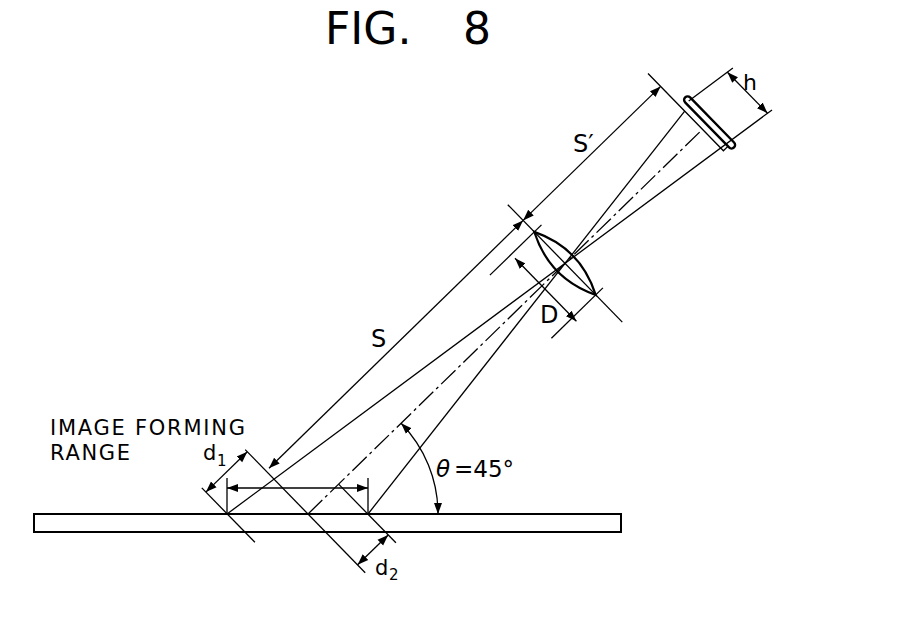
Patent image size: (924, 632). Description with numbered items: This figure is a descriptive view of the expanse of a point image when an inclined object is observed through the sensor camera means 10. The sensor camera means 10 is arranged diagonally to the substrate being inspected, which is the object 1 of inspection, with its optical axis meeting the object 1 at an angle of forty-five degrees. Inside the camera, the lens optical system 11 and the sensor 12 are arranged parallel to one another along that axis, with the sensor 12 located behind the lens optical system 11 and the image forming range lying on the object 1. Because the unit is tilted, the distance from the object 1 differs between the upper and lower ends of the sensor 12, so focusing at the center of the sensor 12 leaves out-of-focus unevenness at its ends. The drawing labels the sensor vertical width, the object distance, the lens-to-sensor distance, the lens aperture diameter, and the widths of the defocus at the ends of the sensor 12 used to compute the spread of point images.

The object of inspection 1 is at (100, 524).
The sensor camera means 10 is at (735, 283).
The lens optical system 11 is at (590, 276).
The sensor 12 is at (735, 148).